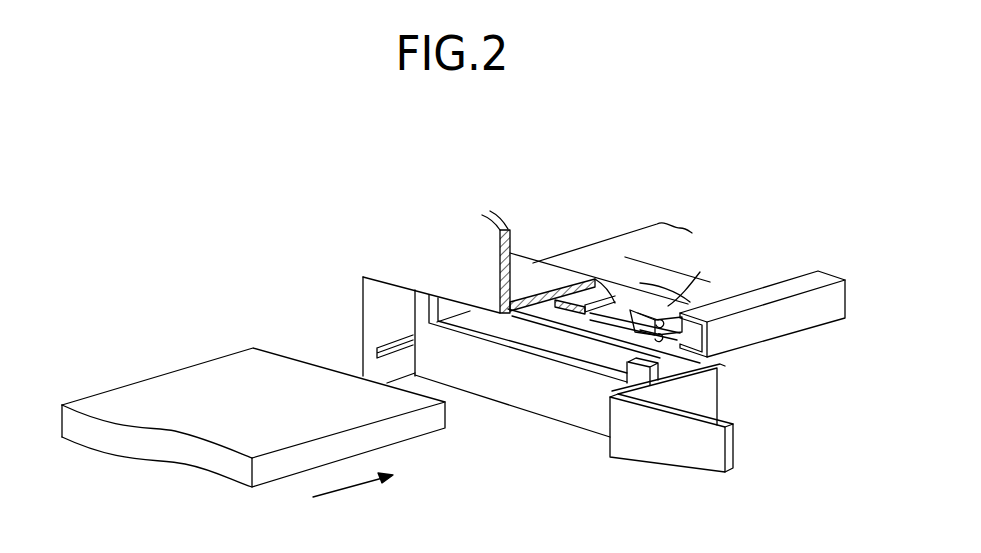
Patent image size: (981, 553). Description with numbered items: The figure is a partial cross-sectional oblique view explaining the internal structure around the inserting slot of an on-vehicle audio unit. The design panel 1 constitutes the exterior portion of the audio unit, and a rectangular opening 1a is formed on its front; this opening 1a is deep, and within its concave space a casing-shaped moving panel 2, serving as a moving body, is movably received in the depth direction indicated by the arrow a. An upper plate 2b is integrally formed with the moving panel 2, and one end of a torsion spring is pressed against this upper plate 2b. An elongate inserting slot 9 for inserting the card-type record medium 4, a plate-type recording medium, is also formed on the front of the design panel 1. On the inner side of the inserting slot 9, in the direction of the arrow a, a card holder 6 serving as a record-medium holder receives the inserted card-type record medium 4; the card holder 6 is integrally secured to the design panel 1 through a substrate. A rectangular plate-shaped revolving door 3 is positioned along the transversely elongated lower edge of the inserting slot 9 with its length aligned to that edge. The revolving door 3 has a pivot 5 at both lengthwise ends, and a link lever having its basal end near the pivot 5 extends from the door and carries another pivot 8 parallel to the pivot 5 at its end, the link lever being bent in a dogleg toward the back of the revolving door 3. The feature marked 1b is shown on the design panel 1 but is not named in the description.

The design panel 1 is at (401, 289).
The rectangular opening 1a is at (364, 297).
The guide groove 1b is at (388, 343).
The moving panel 2 is at (485, 387).
The upper plate 2b is at (593, 298).
The revolving door 3 is at (625, 308).
The card-type record medium 4 is at (193, 374).
The pivot 5 is at (643, 338).
The card holder 6 is at (778, 282).
The pivot 8 is at (648, 312).
The inserting slot 9 is at (553, 350).
The arrow a is at (352, 490).